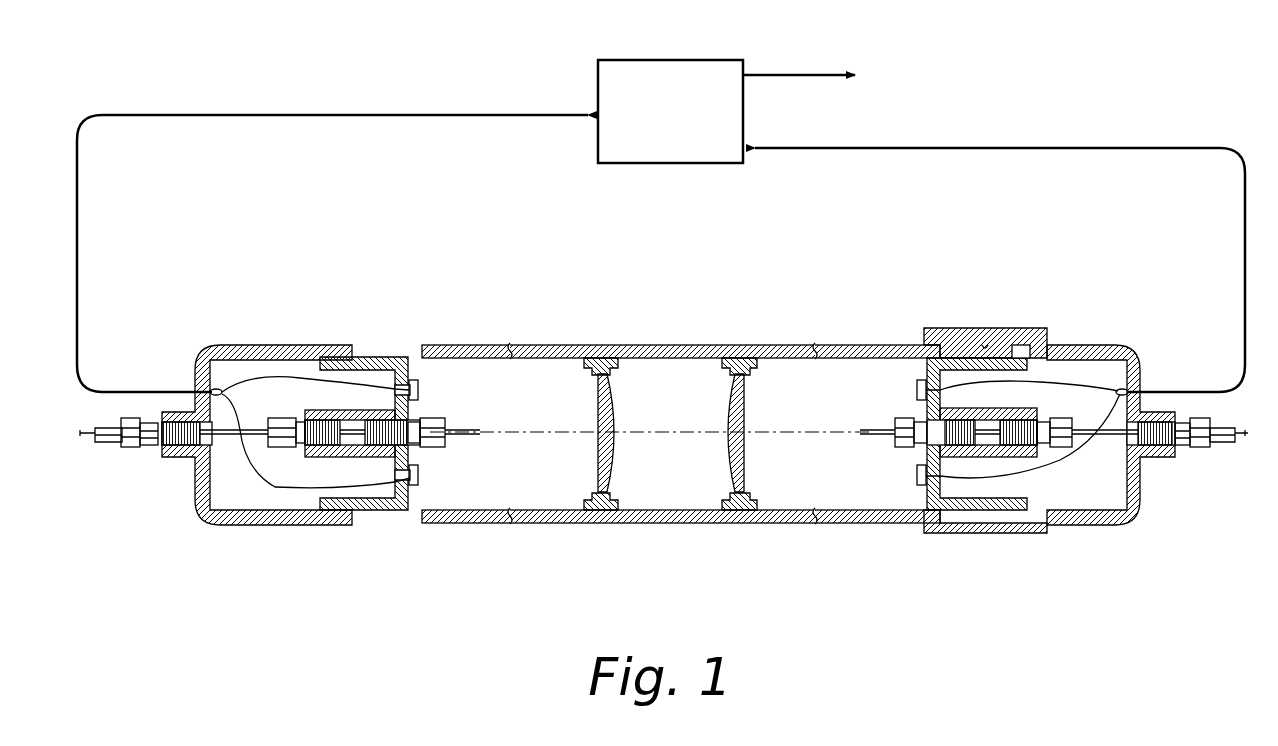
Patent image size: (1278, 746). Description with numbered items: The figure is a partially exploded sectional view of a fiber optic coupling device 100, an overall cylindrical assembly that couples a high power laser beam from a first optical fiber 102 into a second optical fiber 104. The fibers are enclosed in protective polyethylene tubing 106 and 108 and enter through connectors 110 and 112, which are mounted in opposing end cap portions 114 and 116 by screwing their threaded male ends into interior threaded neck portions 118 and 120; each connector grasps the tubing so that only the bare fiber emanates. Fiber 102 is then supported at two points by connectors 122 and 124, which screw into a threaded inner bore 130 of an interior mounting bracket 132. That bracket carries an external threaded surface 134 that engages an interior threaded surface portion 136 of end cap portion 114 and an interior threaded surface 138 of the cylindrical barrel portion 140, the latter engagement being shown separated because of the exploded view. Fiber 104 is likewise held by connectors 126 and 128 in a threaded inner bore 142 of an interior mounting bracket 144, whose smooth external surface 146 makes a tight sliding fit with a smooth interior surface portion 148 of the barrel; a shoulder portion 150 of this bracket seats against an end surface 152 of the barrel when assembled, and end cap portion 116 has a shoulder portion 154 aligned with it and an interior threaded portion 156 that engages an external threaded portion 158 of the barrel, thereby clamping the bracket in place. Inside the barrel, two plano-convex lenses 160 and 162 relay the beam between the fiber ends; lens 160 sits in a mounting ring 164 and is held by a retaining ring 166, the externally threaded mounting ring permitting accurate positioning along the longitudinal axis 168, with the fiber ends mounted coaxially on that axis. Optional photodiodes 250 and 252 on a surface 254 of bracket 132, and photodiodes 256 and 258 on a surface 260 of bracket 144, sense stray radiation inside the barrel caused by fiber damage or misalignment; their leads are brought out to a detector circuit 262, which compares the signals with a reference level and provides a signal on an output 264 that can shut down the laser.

The fiber optic coupling device 100 is at (690, 607).
The first optical fiber 102 is at (100, 428).
The second optical fiber 104 is at (862, 434).
The protective polyethylene tubing 106 is at (108, 442).
The protective polyethylene tubing 108 is at (1226, 442).
The connector 110 is at (150, 448).
The connector 112 is at (1195, 450).
The end cap portion 114 is at (262, 343).
The end cap portion 116 is at (1095, 343).
The threaded neck portion 118 is at (178, 458).
The threaded neck portion 120 is at (1160, 458).
The connector 122 is at (285, 418).
The connector 124 is at (442, 448).
The connector 126 is at (1057, 448).
The connector 128 is at (935, 412).
The threaded inner bore 130 is at (318, 457).
The interior mounting bracket 132 is at (401, 355).
The external threaded surface 134 is at (380, 355).
The interior threaded surface portion 136 is at (322, 368).
The interior threaded surface 138 is at (456, 343).
The cylindrical barrel portion 140 is at (668, 343).
The threaded inner bore 142 is at (990, 420).
The interior mounting bracket 144 is at (926, 365).
The external surface 146 is at (992, 535).
The smooth interior surface portion 148 is at (843, 355).
The shoulder portion 150 is at (1020, 346).
The end surface 152 is at (950, 333).
The shoulder portion 154 is at (1030, 345).
The interior threaded portion 156 is at (985, 345).
The external threaded portion 158 is at (880, 350).
The plano-convex lens 160 is at (617, 450).
The plano-convex lens 162 is at (730, 410).
The mounting ring 164 is at (620, 512).
The retaining ring 166 is at (577, 512).
The longitudinal axis 168 is at (770, 512).
The photodiode 250 is at (420, 389).
The photodiode 252 is at (420, 482).
The surface 254 is at (420, 377).
The photodiode 256 is at (915, 390).
The photodiode 258 is at (915, 474).
The surface 260 is at (925, 488).
The detector circuit 262 is at (597, 73).
The output 264 is at (805, 73).